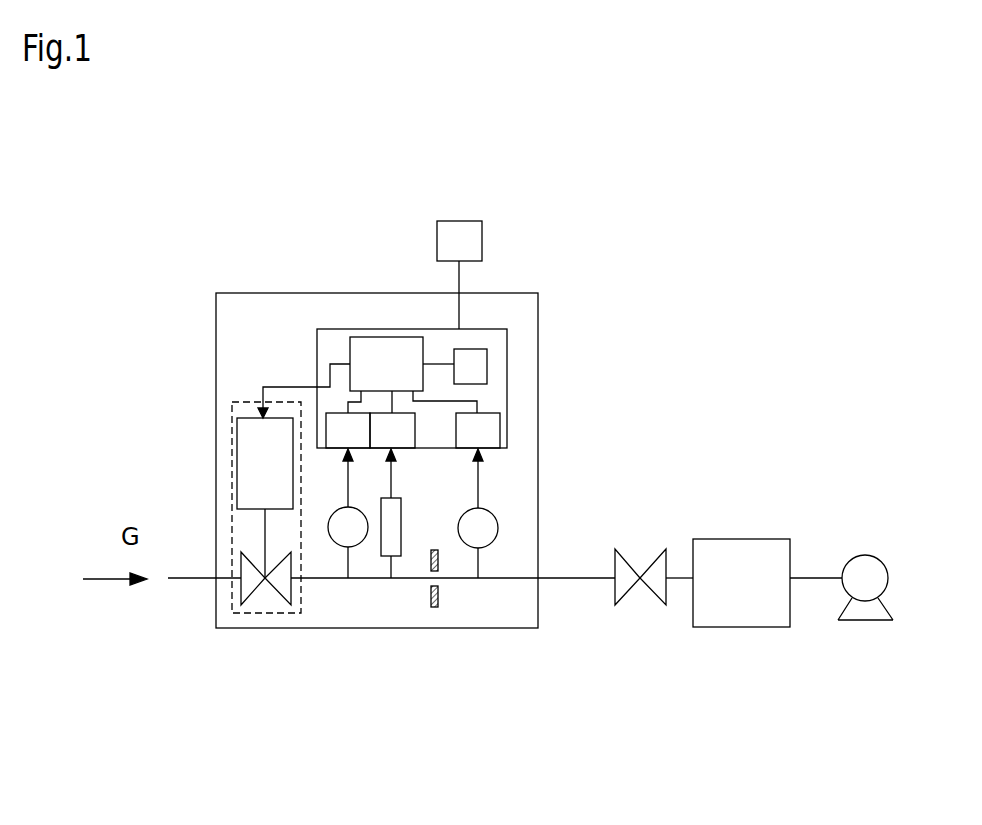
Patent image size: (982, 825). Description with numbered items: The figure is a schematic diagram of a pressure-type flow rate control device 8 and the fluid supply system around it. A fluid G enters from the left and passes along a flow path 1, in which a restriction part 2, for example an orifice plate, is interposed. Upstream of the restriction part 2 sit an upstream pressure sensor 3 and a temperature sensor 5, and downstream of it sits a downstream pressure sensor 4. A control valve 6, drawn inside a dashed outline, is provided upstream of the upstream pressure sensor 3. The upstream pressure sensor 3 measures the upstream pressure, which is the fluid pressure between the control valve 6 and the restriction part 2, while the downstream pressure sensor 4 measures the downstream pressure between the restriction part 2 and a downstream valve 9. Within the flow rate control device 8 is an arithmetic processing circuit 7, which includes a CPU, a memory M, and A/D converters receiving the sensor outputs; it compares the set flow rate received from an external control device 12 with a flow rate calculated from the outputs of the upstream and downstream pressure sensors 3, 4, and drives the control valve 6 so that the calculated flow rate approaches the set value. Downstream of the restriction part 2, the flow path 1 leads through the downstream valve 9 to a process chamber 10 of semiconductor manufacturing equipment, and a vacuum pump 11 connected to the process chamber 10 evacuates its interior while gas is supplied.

The flow path 1 is at (505, 580).
The restriction part 2 is at (432, 607).
The upstream pressure sensor 3 is at (338, 543).
The downstream pressure sensor 4 is at (490, 523).
The temperature sensor 5 is at (382, 548).
The control valve 6 is at (228, 492).
The arithmetic processing circuit 7 is at (508, 380).
The pressure-type flow rate control device 8 is at (549, 326).
The downstream valve 9 is at (650, 536).
The process chamber 10 is at (778, 539).
The vacuum pump 11 is at (870, 626).
The external control device 12 is at (440, 244).